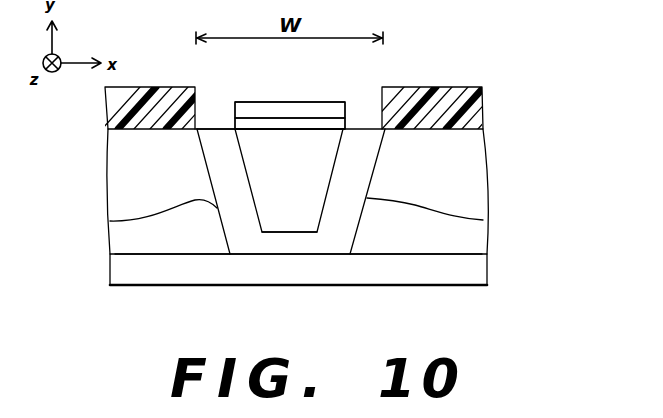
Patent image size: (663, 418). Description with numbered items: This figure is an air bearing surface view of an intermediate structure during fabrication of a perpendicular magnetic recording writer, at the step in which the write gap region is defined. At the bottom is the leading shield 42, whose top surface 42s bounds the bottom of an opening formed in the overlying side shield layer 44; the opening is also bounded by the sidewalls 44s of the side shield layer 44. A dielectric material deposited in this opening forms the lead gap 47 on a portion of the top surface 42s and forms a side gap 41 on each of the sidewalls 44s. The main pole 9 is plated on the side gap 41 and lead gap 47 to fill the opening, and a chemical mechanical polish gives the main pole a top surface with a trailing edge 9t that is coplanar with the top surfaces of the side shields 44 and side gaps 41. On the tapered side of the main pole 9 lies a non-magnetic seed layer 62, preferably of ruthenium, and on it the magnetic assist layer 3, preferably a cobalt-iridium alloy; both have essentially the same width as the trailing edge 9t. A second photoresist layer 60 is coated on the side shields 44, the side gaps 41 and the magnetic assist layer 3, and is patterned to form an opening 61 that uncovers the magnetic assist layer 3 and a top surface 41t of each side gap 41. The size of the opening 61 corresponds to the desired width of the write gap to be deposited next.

The magnetic assist layer 3 is at (293, 115).
The main pole 9 is at (272, 217).
The trailing edge 9t is at (252, 129).
The side gap 41 is at (240, 222).
The top surface of side gap 41t is at (210, 130).
The leading shield 42 is at (472, 268).
The top surface of leading shield 42s is at (295, 254).
The side shield layer 44 is at (122, 183).
The sidewalls of side shield layer 44s is at (110, 221).
The lead gap 47 is at (312, 243).
The second photoresist layer 60 is at (117, 106).
The opening 61 is at (323, 97).
The non-magnetic seed layer 62 is at (249, 123).